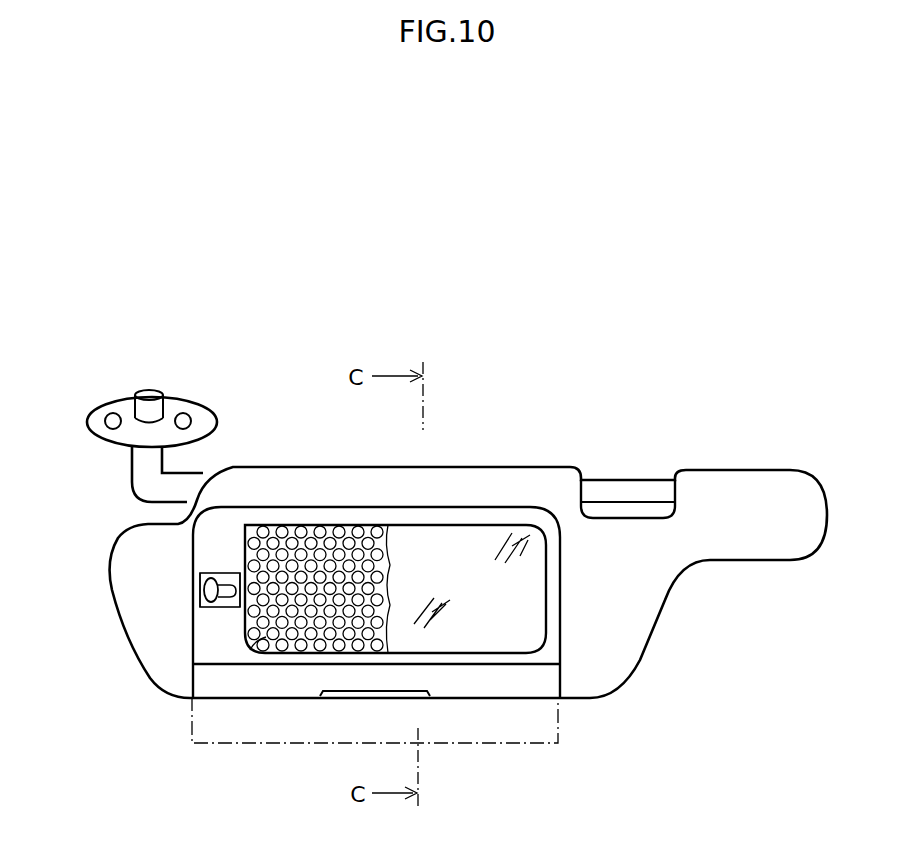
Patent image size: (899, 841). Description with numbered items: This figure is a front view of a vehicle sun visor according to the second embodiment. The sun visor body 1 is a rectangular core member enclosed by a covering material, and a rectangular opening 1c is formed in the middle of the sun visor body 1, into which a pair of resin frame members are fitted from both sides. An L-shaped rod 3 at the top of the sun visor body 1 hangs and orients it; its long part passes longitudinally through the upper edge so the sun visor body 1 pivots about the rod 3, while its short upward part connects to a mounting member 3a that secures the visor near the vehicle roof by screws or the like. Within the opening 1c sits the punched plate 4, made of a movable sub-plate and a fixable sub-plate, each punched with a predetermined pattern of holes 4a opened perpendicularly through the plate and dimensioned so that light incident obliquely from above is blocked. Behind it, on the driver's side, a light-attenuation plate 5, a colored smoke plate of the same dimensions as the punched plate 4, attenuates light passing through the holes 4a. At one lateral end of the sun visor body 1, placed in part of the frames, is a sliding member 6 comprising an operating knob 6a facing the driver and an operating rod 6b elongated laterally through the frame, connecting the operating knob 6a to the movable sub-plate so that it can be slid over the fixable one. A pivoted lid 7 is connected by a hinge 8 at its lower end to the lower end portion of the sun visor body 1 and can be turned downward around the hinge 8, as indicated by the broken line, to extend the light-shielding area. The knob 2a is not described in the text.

The sun visor body 1 is at (473, 490).
The rectangular opening 1c is at (316, 518).
The knob 2a is at (203, 598).
The rod 3 is at (613, 488).
The mounting member 3a is at (125, 397).
The punched plate 4 is at (288, 652).
The holes 4a is at (258, 650).
The light-attenuation plate 5 is at (530, 635).
The sliding member 6 is at (203, 613).
The operating knob 6a is at (215, 573).
The operating rod 6b is at (240, 573).
The pivoted lid 7 is at (500, 685).
The hinge 8 is at (352, 698).